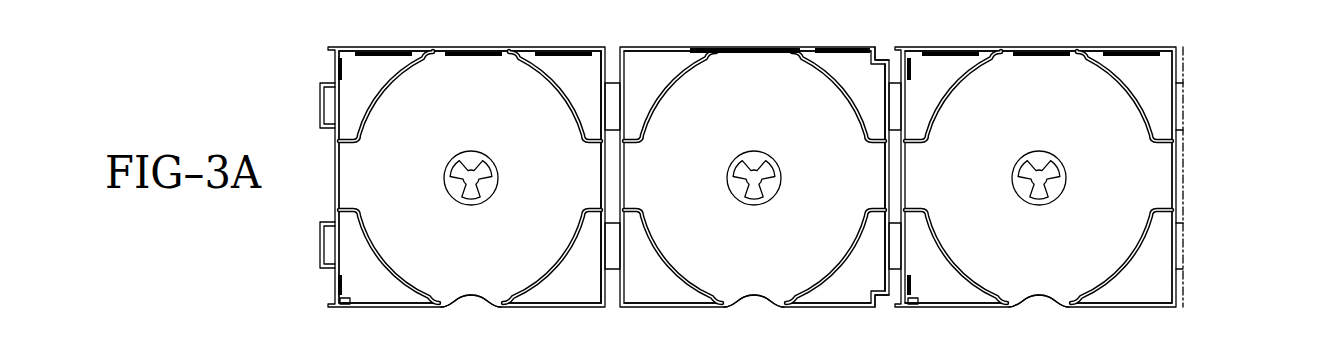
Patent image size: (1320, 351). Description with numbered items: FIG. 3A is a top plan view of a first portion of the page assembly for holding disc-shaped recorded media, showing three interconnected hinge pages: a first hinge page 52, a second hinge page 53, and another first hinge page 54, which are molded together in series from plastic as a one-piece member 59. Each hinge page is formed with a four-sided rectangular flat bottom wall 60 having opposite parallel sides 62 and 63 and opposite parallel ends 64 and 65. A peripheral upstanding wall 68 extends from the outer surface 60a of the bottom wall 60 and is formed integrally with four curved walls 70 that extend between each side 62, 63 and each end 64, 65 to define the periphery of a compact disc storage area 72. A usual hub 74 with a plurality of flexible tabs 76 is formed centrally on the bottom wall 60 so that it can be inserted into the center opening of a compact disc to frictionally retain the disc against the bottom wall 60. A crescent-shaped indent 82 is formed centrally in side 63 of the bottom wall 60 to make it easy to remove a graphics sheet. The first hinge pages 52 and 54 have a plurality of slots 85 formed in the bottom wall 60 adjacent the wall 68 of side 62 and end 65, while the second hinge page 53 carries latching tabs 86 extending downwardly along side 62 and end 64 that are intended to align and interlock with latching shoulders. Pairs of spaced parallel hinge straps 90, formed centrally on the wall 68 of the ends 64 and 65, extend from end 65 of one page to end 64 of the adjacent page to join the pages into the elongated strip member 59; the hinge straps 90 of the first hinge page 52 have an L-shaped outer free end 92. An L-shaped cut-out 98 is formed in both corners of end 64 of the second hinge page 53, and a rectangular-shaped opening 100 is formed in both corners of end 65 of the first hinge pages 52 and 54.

The first hinge page 52 is at (323, 61).
The second hinge page 53 is at (676, 44).
The first hinge page 54 is at (1178, 42).
The one-piece member 59 is at (1200, 64).
The bottom wall 60 is at (430, 95).
The outer surface 60a is at (1108, 255).
The side 62 is at (527, 46).
The side 63 is at (547, 307).
The end 64 is at (604, 305).
The end 65 is at (337, 97).
The peripheral upstanding wall 68 is at (391, 307).
The curved wall 70 is at (384, 272).
The compact disc storage area 72 is at (386, 128).
The hub 74 is at (488, 153).
The flexible tab 76 is at (472, 168).
The crescent-shaped indent 82 is at (475, 298).
The slot 85 is at (376, 52).
The latching tab 86 is at (750, 49).
The hinge strap 90 is at (612, 107).
The L-shaped outer free end 92 is at (322, 121).
The L-shaped cut-out 98 is at (878, 58).
The rectangular-shaped opening 100 is at (345, 304).